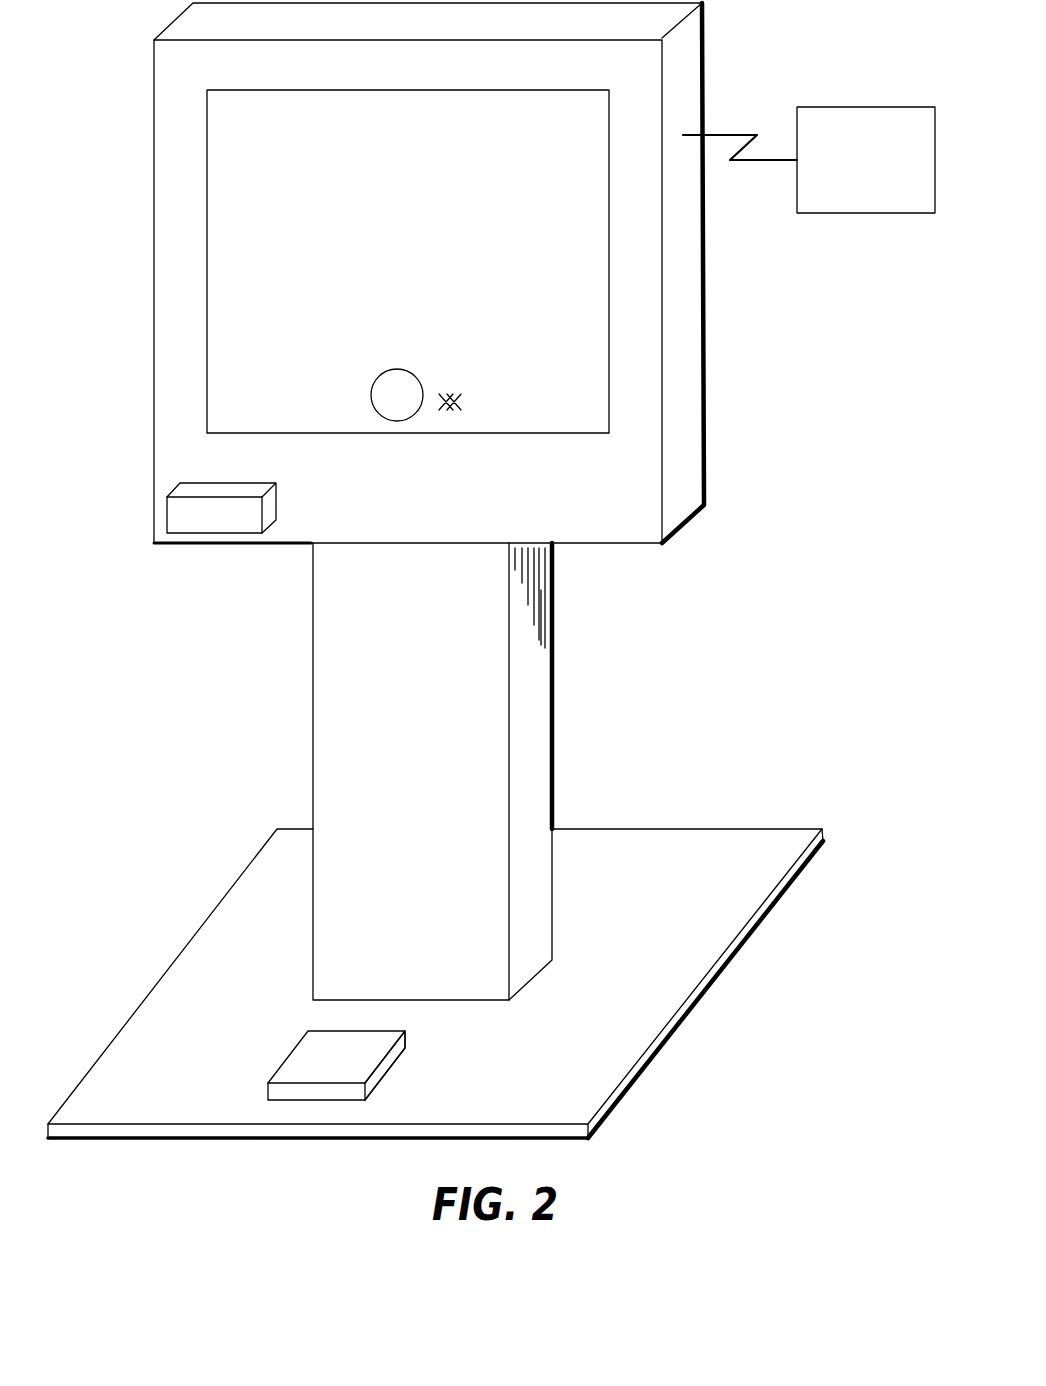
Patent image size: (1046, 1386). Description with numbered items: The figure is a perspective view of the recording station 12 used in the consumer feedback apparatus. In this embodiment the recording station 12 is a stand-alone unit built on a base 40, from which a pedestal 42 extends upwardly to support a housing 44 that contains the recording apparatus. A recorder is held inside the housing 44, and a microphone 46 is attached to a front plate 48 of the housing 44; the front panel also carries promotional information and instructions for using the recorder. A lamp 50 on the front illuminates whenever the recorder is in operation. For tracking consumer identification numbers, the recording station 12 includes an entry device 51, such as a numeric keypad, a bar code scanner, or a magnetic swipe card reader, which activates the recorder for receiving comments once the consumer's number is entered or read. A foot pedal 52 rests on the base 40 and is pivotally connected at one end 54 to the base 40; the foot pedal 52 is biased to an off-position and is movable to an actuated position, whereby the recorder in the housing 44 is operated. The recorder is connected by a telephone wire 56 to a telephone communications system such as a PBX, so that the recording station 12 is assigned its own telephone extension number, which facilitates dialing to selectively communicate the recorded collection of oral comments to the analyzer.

The recording station 12 is at (491, 602).
The base 40 is at (683, 945).
The pedestal 42 is at (535, 767).
The housing 44 is at (685, 337).
The microphone 46 is at (392, 398).
The front plate 48 is at (622, 514).
The lamp 50 is at (447, 412).
The entry device 51 is at (216, 517).
The foot pedal 52 is at (340, 1062).
The end of foot pedal 54 is at (388, 1063).
The telephone wire 56 is at (742, 132).